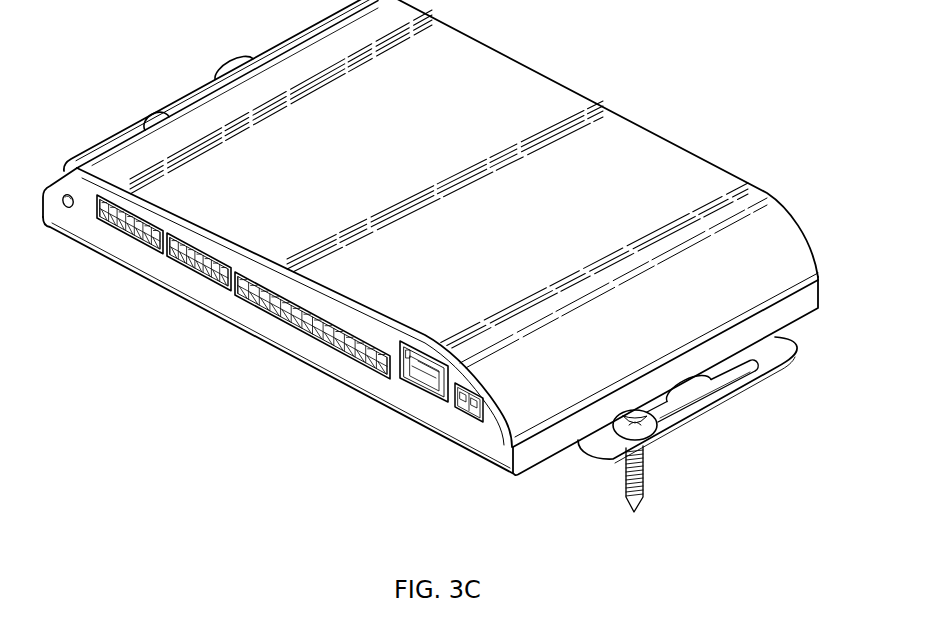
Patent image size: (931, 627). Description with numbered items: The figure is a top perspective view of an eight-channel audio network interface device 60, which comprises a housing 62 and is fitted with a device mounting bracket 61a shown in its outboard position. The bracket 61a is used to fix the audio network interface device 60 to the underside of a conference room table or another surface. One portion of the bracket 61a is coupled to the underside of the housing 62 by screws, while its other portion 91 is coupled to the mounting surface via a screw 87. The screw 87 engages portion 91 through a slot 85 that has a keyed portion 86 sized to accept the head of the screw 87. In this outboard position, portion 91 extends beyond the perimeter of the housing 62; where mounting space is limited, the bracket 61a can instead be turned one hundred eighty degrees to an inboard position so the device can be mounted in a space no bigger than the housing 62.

The audio network interface device 60 is at (551, 56).
The housing 62 is at (600, 106).
The bracket 61a is at (784, 360).
The slot 85 is at (735, 376).
The keyed portion 86 is at (688, 404).
The screw 87 is at (630, 500).
The portion 91 is at (592, 450).